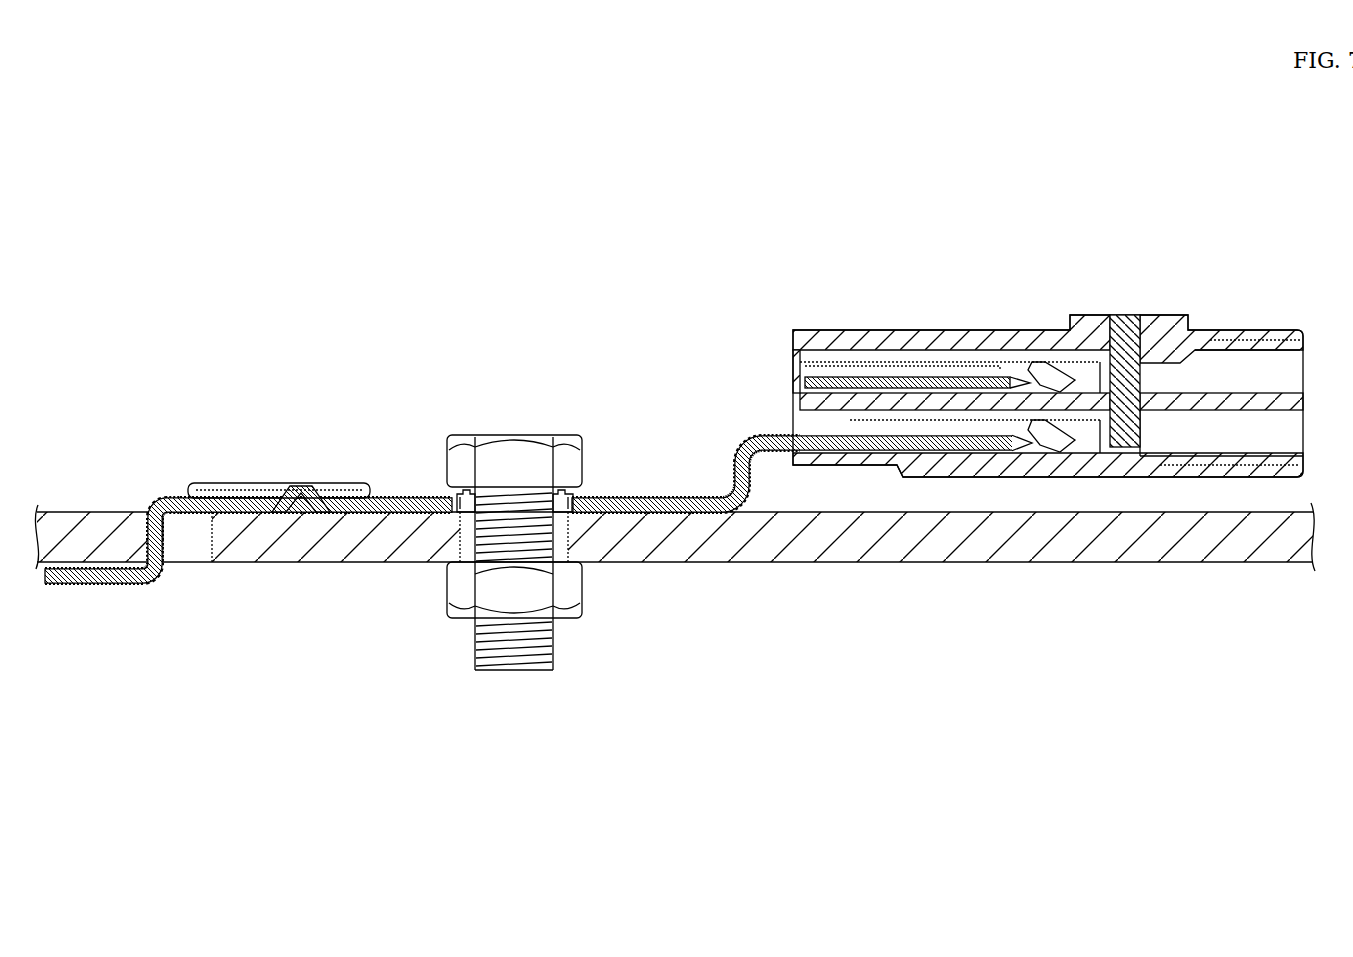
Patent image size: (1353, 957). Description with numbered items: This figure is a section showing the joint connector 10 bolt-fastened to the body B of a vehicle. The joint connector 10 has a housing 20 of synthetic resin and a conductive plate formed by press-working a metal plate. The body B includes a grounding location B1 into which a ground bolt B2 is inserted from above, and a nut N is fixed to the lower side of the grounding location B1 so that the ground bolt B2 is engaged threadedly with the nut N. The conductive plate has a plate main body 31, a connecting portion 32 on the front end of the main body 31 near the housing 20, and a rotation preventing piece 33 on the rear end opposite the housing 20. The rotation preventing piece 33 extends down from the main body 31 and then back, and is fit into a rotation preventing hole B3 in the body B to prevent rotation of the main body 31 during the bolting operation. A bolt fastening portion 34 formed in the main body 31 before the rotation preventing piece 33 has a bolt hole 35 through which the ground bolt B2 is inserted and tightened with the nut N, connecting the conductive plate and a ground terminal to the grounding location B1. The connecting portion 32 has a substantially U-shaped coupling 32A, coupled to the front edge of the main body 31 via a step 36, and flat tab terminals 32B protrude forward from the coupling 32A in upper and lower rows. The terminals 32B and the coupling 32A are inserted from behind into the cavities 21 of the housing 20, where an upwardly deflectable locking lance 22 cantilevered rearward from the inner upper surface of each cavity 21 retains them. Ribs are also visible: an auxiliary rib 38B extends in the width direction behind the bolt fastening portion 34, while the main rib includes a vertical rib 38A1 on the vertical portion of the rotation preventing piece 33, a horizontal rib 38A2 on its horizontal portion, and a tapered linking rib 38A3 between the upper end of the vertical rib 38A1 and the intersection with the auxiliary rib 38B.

The joint connector 10 is at (723, 262).
The housing 20 is at (1048, 410).
The cavities 21 is at (1250, 356).
The locking lance 22 is at (1044, 362).
The plate main body 31 is at (426, 529).
The connecting portion 32 is at (838, 452).
The coupling 32A is at (823, 376).
The terminals 32B is at (985, 376).
The rotation preventing piece 33 is at (118, 587).
The bolt fastening portion 34 is at (458, 497).
The bolt hole 35 is at (566, 492).
The step 36 is at (768, 455).
The vertical rib 38A1 is at (140, 540).
The horizontal rib 38A2 is at (127, 566).
The linking rib 38A3 is at (215, 497).
The auxiliary rib 38B is at (292, 485).
The body B is at (1083, 540).
The grounding location B1 is at (578, 540).
The ground bolt B2 is at (514, 452).
The rotation preventing hole B3 is at (207, 540).
The nut N is at (458, 592).